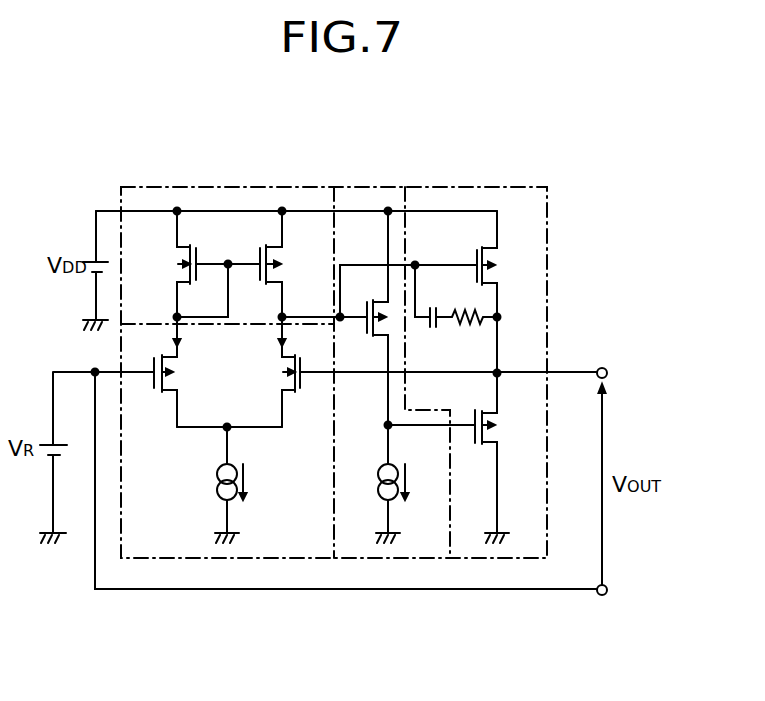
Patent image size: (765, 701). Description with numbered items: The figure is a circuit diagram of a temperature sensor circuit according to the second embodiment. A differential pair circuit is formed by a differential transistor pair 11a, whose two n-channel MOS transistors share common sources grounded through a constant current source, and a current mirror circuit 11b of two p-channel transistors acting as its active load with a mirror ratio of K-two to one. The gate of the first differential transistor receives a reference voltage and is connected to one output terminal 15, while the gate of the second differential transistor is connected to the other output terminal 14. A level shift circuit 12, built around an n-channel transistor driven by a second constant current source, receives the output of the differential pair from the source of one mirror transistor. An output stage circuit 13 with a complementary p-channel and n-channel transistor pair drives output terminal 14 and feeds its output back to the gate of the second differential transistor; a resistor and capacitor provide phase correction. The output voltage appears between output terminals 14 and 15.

The differential transistor pair 11a is at (160, 548).
The current mirror circuit 11b is at (157, 187).
The level shift circuit 12 is at (362, 547).
The output stage circuit 13 is at (512, 552).
The output terminal 14 is at (605, 368).
The output terminal 15 is at (604, 596).